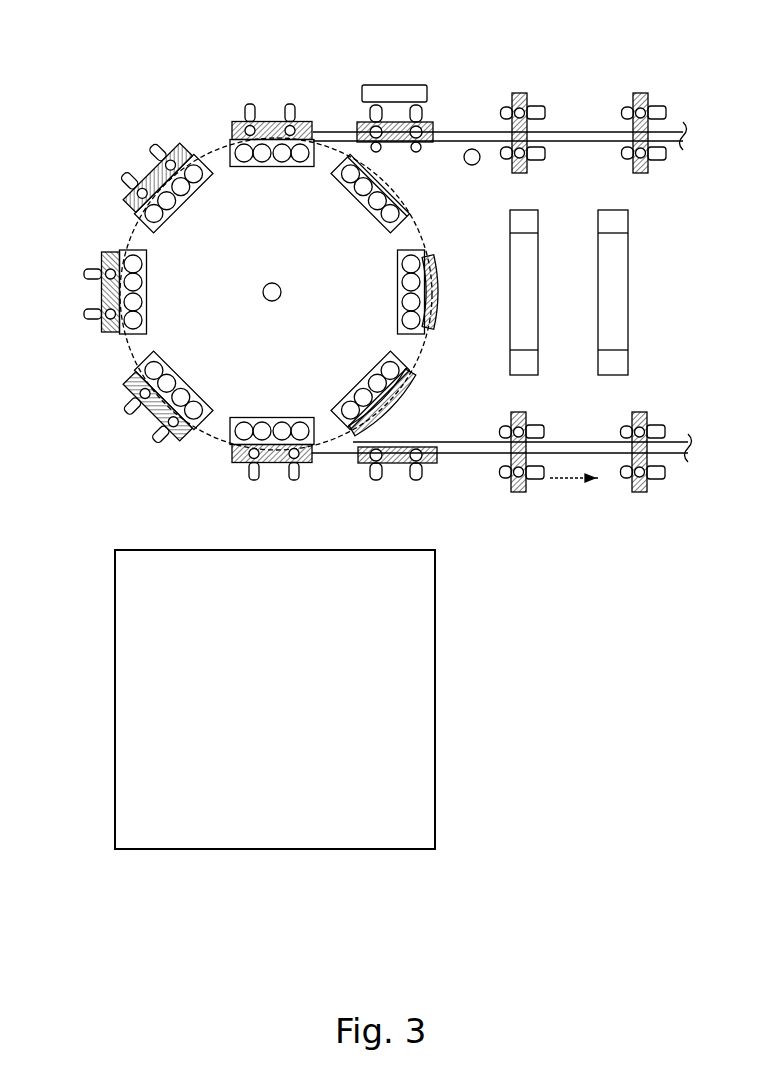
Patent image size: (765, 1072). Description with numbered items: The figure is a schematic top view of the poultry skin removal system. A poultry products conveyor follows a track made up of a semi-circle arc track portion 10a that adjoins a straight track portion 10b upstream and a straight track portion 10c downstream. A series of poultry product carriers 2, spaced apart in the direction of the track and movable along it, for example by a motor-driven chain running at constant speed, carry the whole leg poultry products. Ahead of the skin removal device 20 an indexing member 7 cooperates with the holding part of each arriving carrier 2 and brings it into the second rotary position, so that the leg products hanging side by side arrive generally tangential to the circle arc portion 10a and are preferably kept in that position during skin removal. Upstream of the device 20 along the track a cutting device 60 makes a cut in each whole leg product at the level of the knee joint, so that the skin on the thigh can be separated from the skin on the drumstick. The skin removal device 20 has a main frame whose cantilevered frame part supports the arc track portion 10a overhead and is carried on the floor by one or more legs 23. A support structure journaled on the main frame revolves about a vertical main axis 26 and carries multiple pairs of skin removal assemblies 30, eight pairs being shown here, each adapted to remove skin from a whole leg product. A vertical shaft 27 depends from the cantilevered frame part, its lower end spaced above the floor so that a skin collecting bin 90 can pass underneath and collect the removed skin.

The poultry product carrier 2 is at (172, 132).
The indexing member 7 is at (472, 166).
The circle arc track portion 10a is at (200, 138).
The straight track portion 10b is at (567, 138).
The straight track portion 10c is at (452, 448).
The skin removal device 20 is at (428, 375).
The leg 23 is at (590, 283).
The vertical main axis 26 is at (283, 283).
The vertical shaft 27 is at (282, 292).
The skin removal assembly 30 is at (297, 173).
The cutting device 60 is at (398, 82).
The skin collecting bin 90 is at (430, 637).